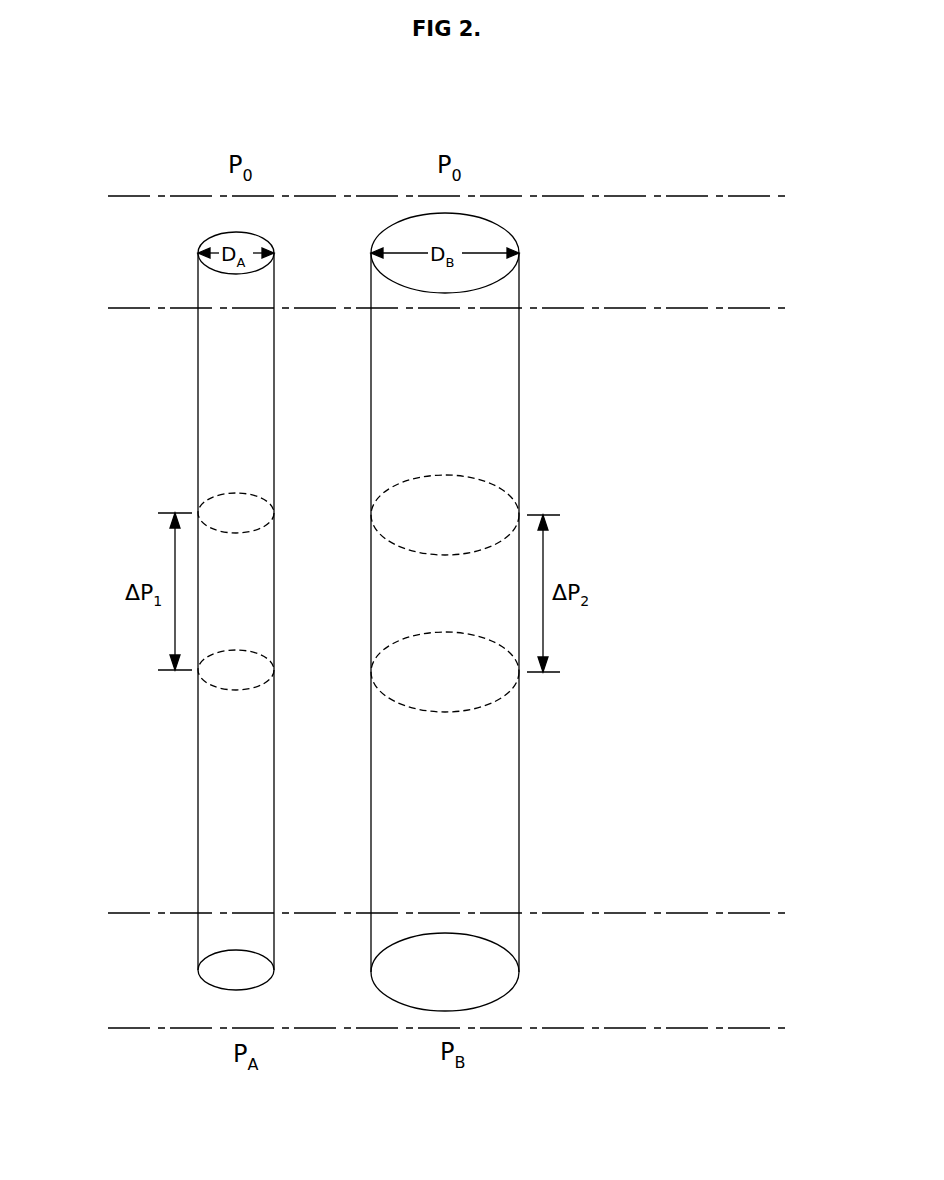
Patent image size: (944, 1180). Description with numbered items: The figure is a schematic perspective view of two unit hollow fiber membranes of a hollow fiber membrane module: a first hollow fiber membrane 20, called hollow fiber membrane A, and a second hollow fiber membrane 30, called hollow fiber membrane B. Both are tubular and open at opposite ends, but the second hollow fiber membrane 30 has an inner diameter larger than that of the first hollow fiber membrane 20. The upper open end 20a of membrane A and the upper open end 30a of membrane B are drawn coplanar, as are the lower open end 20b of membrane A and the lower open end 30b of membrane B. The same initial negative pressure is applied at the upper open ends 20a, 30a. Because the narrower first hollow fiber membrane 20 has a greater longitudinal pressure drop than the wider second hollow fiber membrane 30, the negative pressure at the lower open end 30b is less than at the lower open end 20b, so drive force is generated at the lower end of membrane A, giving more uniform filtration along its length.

The first hollow fiber membrane 20 is at (197, 783).
The upper open end of the first hollow fiber membrane 20a is at (210, 242).
The lower open end of the first hollow fiber membrane 20b is at (207, 985).
The second hollow fiber membrane 30 is at (520, 797).
The upper open end of the second hollow fiber membrane 30a is at (510, 228).
The lower open end of the second hollow fiber membrane 30b is at (495, 1000).